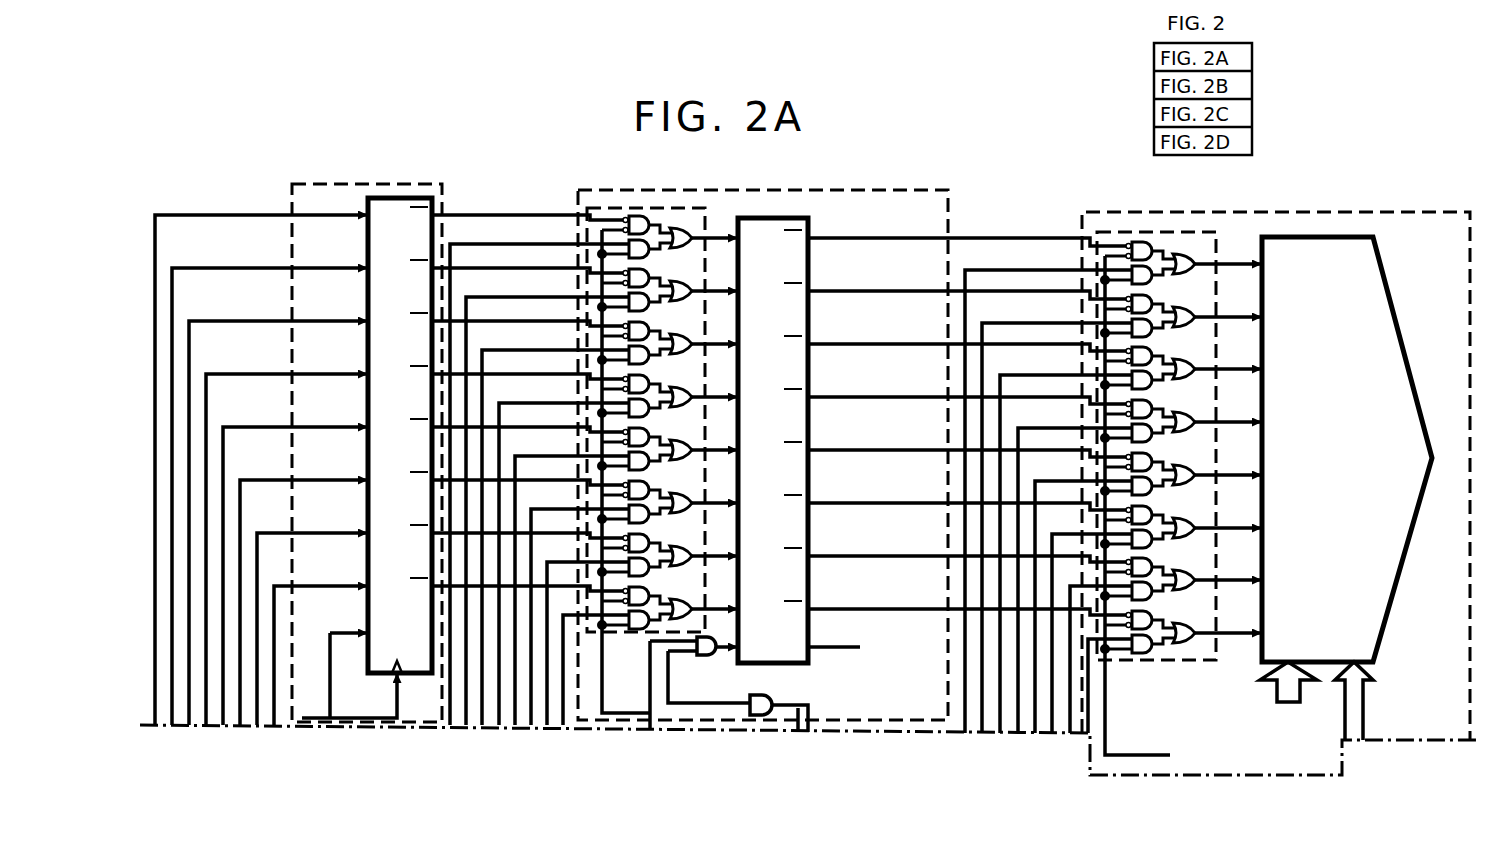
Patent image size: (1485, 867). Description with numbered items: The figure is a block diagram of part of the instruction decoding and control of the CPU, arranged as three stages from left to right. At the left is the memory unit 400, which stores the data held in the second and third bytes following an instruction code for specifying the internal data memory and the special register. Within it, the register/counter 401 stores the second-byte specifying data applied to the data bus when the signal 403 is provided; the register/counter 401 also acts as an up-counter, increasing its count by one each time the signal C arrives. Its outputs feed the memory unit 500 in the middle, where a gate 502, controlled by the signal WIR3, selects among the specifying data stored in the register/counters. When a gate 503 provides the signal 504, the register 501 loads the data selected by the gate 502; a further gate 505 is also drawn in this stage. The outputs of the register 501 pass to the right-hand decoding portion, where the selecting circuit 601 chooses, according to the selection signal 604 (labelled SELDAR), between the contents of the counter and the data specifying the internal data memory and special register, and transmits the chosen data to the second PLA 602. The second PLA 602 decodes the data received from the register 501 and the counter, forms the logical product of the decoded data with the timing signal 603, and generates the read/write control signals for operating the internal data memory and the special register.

The memory unit 400 is at (292, 203).
The register/counter 401 is at (368, 555).
The signal 403 is at (330, 652).
The memory unit 500 is at (948, 222).
The register 501 is at (808, 433).
The gate 502 is at (639, 632).
The gate 503 is at (708, 656).
The signal 504 is at (727, 651).
The gate 505 is at (770, 693).
The selecting circuit 601 is at (1187, 661).
The second PLA 602 is at (1393, 600).
The timing signal 603 is at (1279, 736).
The selection signal 604 is at (1120, 755).